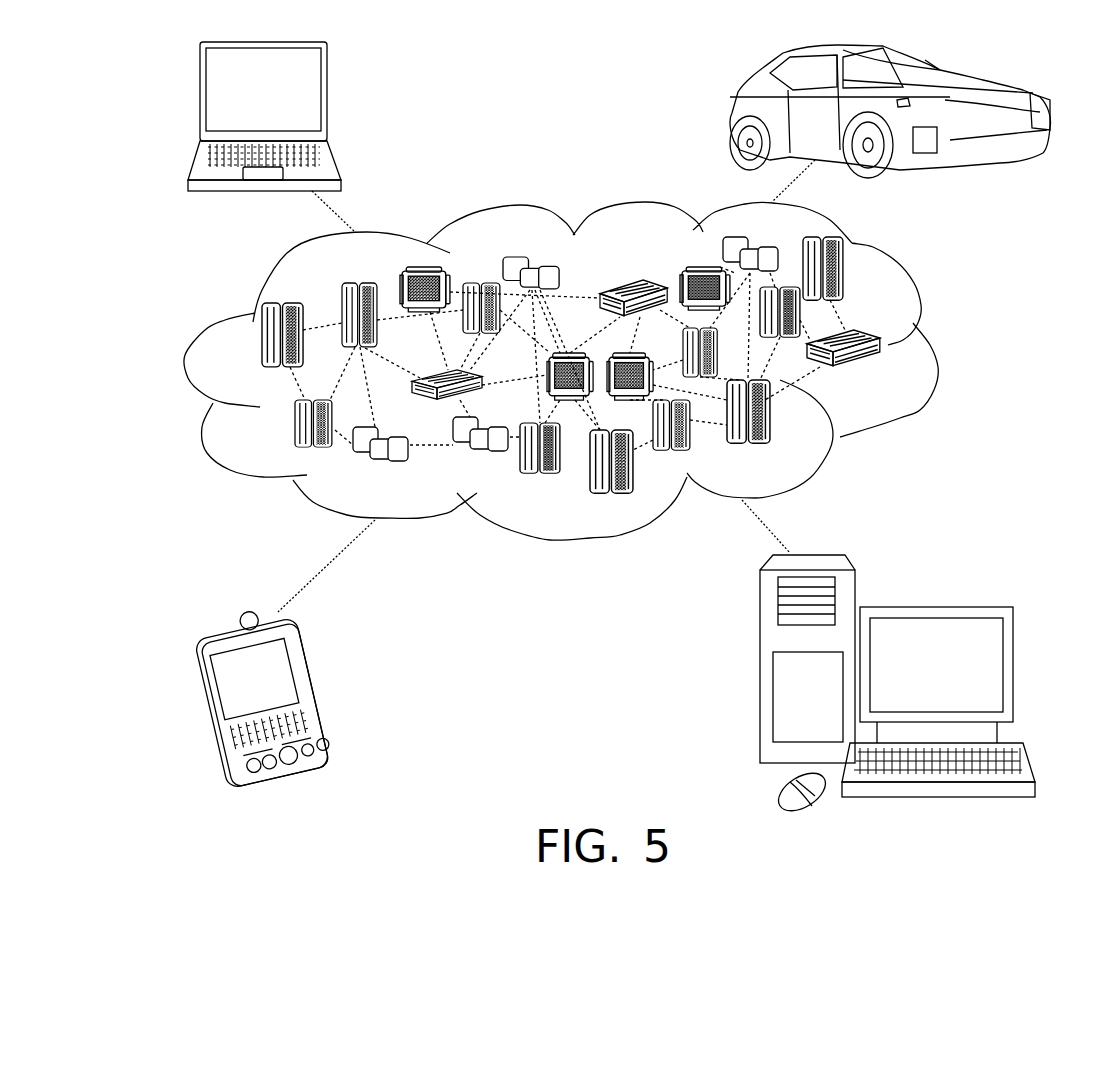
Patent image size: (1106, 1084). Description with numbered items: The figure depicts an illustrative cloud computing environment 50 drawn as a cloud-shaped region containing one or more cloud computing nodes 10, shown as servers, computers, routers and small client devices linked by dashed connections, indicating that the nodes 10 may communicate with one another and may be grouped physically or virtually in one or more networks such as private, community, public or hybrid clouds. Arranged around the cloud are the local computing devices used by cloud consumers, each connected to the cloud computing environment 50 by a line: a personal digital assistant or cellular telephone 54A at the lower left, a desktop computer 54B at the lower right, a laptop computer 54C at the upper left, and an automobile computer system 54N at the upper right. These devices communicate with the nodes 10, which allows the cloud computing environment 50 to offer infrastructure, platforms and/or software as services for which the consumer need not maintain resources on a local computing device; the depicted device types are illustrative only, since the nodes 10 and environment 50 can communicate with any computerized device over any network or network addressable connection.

The cloud computing node 10 is at (878, 371).
The cloud computing environment 50 is at (585, 371).
The personal digital assistant or cellular telephone 54A is at (317, 694).
The desktop computer 54B is at (932, 607).
The laptop computer 54C is at (327, 99).
The automobile computer system 54N is at (732, 112).